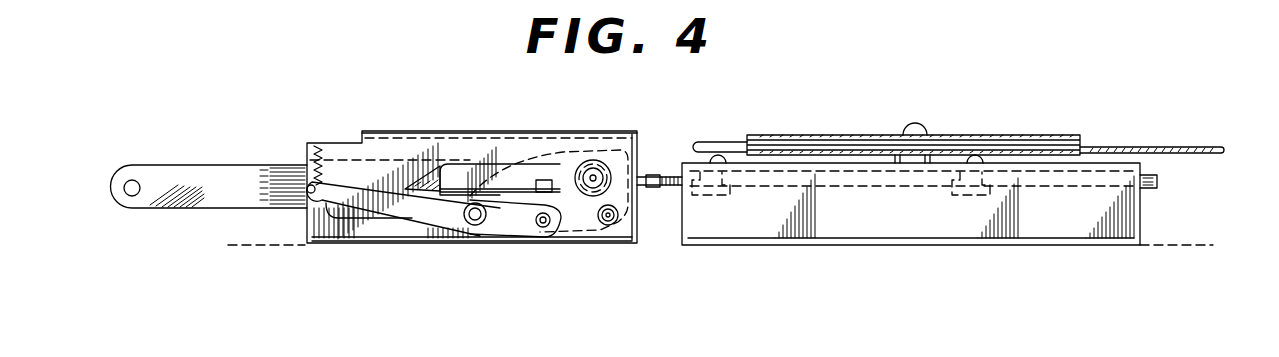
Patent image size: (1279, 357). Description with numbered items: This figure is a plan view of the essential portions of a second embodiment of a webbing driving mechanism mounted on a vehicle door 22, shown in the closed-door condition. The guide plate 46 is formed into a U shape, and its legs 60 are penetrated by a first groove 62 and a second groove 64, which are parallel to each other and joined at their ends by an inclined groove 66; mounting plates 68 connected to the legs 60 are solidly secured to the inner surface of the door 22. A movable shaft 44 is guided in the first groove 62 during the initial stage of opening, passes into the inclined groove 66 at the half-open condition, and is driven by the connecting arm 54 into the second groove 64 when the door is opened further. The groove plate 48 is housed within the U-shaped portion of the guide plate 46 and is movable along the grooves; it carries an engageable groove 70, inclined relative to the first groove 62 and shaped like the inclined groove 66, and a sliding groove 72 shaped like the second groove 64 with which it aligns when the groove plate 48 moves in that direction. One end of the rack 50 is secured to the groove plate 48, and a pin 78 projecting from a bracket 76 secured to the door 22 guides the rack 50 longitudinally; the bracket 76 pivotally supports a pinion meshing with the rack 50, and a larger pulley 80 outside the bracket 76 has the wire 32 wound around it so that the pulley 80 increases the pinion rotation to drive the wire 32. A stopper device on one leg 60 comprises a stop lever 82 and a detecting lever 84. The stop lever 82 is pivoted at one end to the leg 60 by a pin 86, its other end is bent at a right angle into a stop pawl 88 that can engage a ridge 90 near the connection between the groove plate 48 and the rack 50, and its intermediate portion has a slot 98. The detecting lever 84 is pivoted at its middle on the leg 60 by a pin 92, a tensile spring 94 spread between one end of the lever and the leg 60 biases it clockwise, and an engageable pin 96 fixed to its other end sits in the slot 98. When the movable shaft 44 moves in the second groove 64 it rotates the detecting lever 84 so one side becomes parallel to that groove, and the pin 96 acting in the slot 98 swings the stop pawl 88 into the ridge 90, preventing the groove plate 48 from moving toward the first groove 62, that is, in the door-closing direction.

The door 22 is at (298, 243).
The wire 32 is at (1125, 147).
The movable shaft 44 is at (597, 178).
The guide plate 46 is at (457, 130).
The groove plate 48 is at (668, 190).
The rack 50 is at (822, 188).
The connecting arm 54 is at (195, 200).
The leg 60 is at (637, 240).
The first groove 62 is at (568, 160).
The second groove 64 is at (358, 226).
The inclined groove 66 is at (432, 166).
The mounting plate 68 is at (416, 244).
The engageable groove 70 is at (604, 160).
The sliding groove 72 is at (544, 180).
The bracket 76 is at (960, 245).
The pin 78 is at (718, 188).
The pulley 80 is at (965, 140).
The stop lever 82 is at (610, 228).
The detecting lever 84 is at (388, 215).
The pin 86 is at (611, 226).
The stop pawl 88 is at (497, 188).
The ridge 90 is at (713, 188).
The pin 92 is at (475, 226).
The tensile spring 94 is at (320, 150).
The engageable pin 96 is at (553, 240).
The slot 98 is at (540, 228).